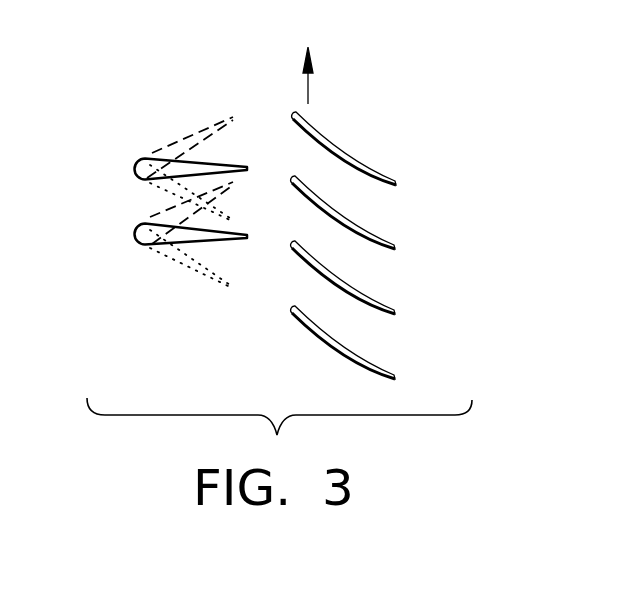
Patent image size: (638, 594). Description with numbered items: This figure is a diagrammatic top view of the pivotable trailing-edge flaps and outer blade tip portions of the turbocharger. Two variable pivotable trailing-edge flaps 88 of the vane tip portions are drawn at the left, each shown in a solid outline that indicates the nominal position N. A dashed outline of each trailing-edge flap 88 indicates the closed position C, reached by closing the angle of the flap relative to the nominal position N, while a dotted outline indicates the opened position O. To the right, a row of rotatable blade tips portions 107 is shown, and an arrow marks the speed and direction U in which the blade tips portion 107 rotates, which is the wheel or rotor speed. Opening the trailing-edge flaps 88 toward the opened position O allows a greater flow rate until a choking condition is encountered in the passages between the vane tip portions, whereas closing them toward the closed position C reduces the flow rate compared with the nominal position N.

The trailing-edge flap 88 is at (215, 165).
The blade tips portion 107 is at (356, 159).
The closed position C is at (232, 186).
The nominal position N is at (226, 239).
The opened position O is at (212, 278).
The speed and direction U is at (309, 90).